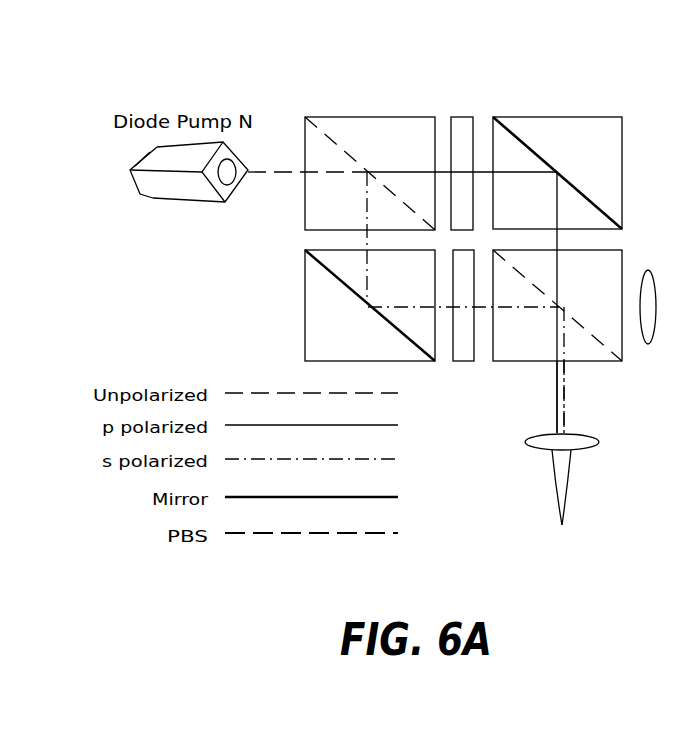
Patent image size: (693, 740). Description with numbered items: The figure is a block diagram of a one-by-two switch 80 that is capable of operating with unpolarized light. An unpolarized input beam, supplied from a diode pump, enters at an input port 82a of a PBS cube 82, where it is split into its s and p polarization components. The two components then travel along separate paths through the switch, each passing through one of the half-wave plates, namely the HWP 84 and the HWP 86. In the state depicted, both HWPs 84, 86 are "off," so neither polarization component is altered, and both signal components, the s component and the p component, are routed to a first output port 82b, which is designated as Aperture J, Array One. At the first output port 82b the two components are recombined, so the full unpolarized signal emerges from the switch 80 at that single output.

The 1×2 switch 80 is at (568, 79).
The PBS cube 82 is at (367, 117).
The input port 82a is at (279, 178).
The first output port 82b is at (574, 393).
The HWP 84 is at (464, 117).
The HWP 86 is at (463, 362).